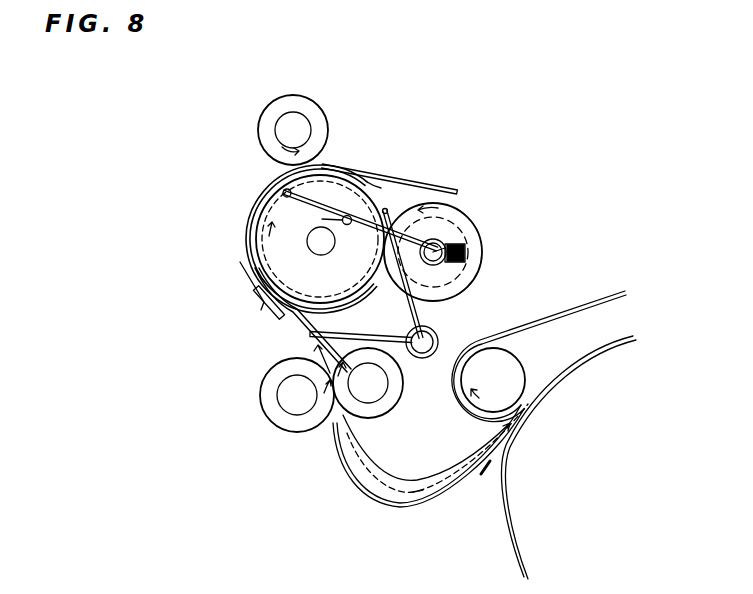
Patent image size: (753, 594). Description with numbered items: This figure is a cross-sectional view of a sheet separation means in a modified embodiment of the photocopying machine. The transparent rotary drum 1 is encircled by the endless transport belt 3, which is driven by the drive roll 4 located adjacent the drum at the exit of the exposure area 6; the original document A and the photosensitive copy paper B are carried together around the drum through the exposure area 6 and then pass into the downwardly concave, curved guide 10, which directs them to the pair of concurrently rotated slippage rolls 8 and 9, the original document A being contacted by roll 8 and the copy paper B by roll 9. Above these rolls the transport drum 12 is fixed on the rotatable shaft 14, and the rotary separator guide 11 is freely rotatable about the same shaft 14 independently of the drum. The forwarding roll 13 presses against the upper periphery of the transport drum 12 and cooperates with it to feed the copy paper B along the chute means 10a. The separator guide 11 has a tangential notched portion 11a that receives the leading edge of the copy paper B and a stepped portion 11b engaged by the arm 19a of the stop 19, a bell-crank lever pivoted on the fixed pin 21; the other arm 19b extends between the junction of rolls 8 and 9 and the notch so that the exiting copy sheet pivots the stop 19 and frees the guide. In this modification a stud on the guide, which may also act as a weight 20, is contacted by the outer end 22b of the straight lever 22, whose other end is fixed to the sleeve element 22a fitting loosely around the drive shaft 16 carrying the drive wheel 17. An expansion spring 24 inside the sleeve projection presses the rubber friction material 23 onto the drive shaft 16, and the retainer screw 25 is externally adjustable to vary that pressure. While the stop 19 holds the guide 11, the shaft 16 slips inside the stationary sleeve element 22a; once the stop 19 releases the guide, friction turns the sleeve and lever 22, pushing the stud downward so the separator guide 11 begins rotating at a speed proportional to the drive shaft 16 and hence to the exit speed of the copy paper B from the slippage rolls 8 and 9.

The transparent rotary drum 1 is at (600, 348).
The endless transport belt 3 is at (600, 299).
The drive roll 4 is at (530, 404).
The exposure area 6 is at (634, 342).
The slippage roll 8 is at (285, 424).
The slippage roll 9 is at (362, 413).
The curved guide 10 is at (397, 504).
The chute means 10a is at (379, 186).
The rotary separator guide 11 is at (254, 230).
The notched portion 11a is at (258, 316).
The stepped portion 11b is at (386, 208).
The transport drum 12 is at (266, 186).
The forwarding roll 13 is at (283, 104).
The rotatable shaft 14 is at (321, 250).
The drive shaft 16 is at (458, 216).
The drive wheel 17 is at (450, 192).
The stop 19 is at (417, 326).
The stop arm 19a is at (444, 202).
The stop arm 19b is at (308, 335).
The weight 20 is at (311, 199).
The fixed pin 21 is at (423, 349).
The straight lever 22 is at (404, 236).
The sleeve element 22a is at (450, 240).
The outer end of lever 22b is at (268, 201).
The friction material 23 is at (456, 262).
The expansion spring 24 is at (465, 253).
The retainer screw 25 is at (464, 246).
The original document A is at (422, 491).
The copy paper B is at (403, 480).